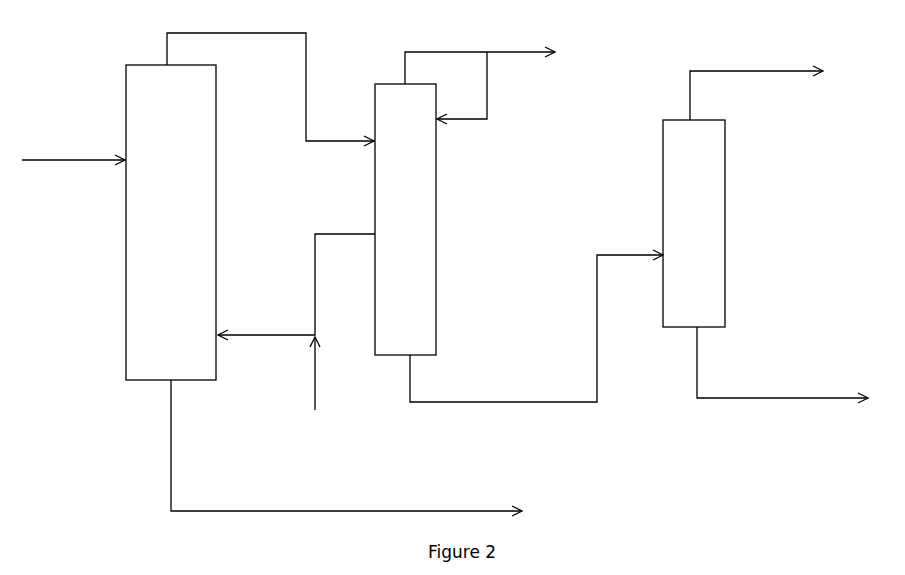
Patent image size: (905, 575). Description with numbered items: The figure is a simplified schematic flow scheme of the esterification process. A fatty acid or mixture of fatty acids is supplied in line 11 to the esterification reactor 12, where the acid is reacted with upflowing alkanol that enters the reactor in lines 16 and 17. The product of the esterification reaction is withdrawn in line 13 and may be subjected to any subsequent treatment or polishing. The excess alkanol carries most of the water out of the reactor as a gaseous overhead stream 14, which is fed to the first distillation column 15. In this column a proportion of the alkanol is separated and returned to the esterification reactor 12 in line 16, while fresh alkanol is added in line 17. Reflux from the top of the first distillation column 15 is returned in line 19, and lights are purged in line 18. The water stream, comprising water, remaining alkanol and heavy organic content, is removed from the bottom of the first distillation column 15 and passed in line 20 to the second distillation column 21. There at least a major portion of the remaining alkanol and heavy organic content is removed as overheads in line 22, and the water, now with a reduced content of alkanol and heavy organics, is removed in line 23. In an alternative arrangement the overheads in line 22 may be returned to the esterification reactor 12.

The line 11 is at (73, 142).
The esterification reactor 12 is at (171, 222).
The line 13 is at (346, 448).
The gaseous overhead stream 14 is at (270, 89).
The first distillation column 15 is at (405, 219).
The line 16 is at (296, 287).
The line 17 is at (337, 373).
The line 18 is at (480, 52).
The line 19 is at (482, 88).
The line 20 is at (536, 326).
The second distillation column 21 is at (694, 223).
The line 22 is at (756, 78).
The line 23 is at (782, 365).